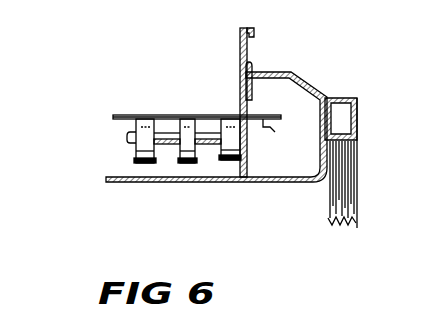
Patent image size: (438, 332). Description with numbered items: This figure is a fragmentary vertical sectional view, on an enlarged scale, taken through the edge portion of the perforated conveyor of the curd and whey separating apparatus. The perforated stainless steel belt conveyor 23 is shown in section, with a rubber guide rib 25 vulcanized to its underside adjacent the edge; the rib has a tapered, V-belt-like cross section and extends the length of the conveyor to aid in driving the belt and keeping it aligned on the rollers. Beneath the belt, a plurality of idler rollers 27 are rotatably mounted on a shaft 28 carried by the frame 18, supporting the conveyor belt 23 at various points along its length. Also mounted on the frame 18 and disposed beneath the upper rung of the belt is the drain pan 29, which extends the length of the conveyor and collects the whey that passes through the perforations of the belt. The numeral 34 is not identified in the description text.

The frame 18 is at (358, 153).
The perforated stainless steel belt conveyor 23 is at (173, 114).
The rubber guide rib 25 is at (272, 128).
The idler roller 27 is at (146, 163).
The shaft 28 is at (170, 144).
The drain pan 29 is at (305, 84).
The element 34 is at (346, 329).